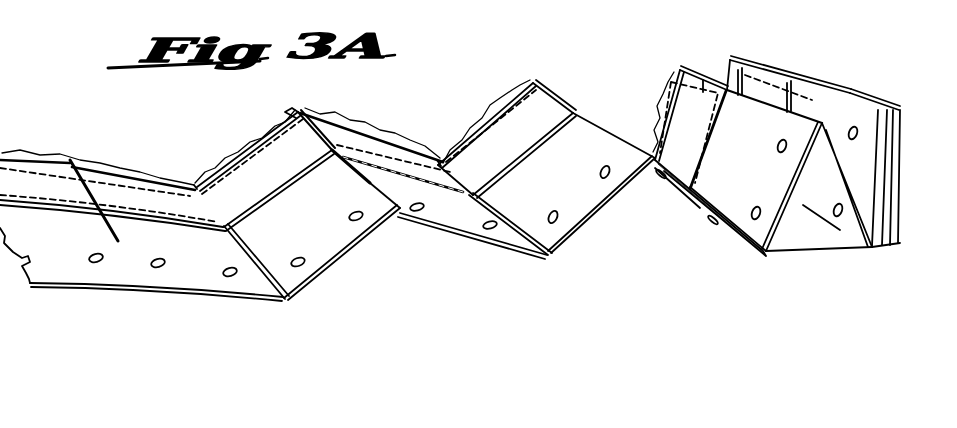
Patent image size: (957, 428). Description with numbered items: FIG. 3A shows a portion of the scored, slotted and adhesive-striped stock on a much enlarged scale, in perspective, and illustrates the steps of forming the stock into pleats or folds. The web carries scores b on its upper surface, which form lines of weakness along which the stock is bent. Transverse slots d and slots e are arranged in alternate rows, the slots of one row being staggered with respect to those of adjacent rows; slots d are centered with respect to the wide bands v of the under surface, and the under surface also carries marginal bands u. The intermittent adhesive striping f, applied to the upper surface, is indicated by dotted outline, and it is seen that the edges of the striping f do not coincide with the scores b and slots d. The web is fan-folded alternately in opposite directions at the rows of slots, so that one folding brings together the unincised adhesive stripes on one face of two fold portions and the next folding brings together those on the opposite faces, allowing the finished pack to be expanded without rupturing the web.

The scores b is at (100, 170).
The slots d is at (72, 162).
The slots e is at (197, 185).
The adhesive striping f is at (160, 186).
The marginal bands u is at (730, 230).
The wide bands v is at (652, 188).